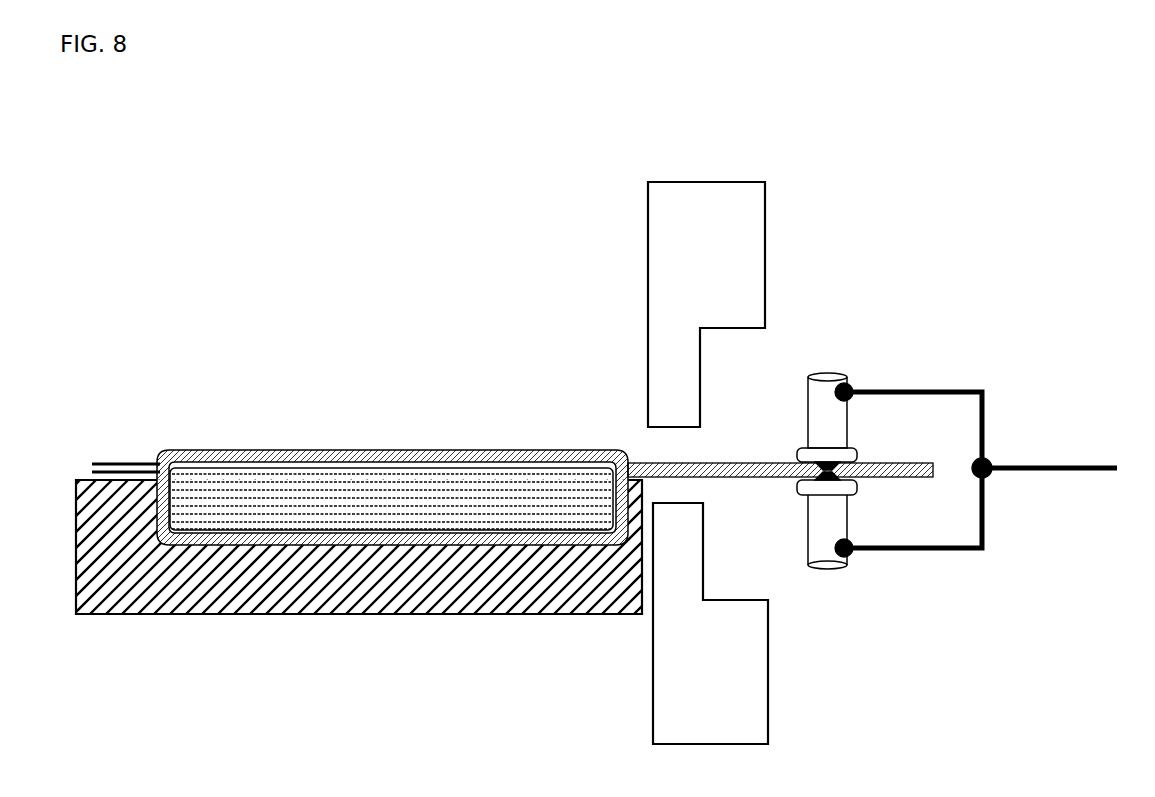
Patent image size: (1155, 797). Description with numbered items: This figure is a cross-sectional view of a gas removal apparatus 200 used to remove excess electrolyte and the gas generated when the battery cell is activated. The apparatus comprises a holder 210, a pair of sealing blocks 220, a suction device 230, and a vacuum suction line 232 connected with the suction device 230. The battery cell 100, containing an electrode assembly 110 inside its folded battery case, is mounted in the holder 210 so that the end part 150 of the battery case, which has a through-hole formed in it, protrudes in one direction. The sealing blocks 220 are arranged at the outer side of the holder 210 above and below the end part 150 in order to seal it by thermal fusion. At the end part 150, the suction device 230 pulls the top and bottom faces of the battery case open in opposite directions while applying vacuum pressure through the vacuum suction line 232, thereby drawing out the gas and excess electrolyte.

The gas removal apparatus 200 is at (118, 207).
The holder 210 is at (310, 608).
The sealing block 220 is at (690, 212).
The battery cell 100 is at (360, 433).
The electrode assembly 110 is at (314, 473).
The end part 150 is at (716, 460).
The suction device 230 is at (831, 362).
The vacuum suction line 232 is at (1050, 452).